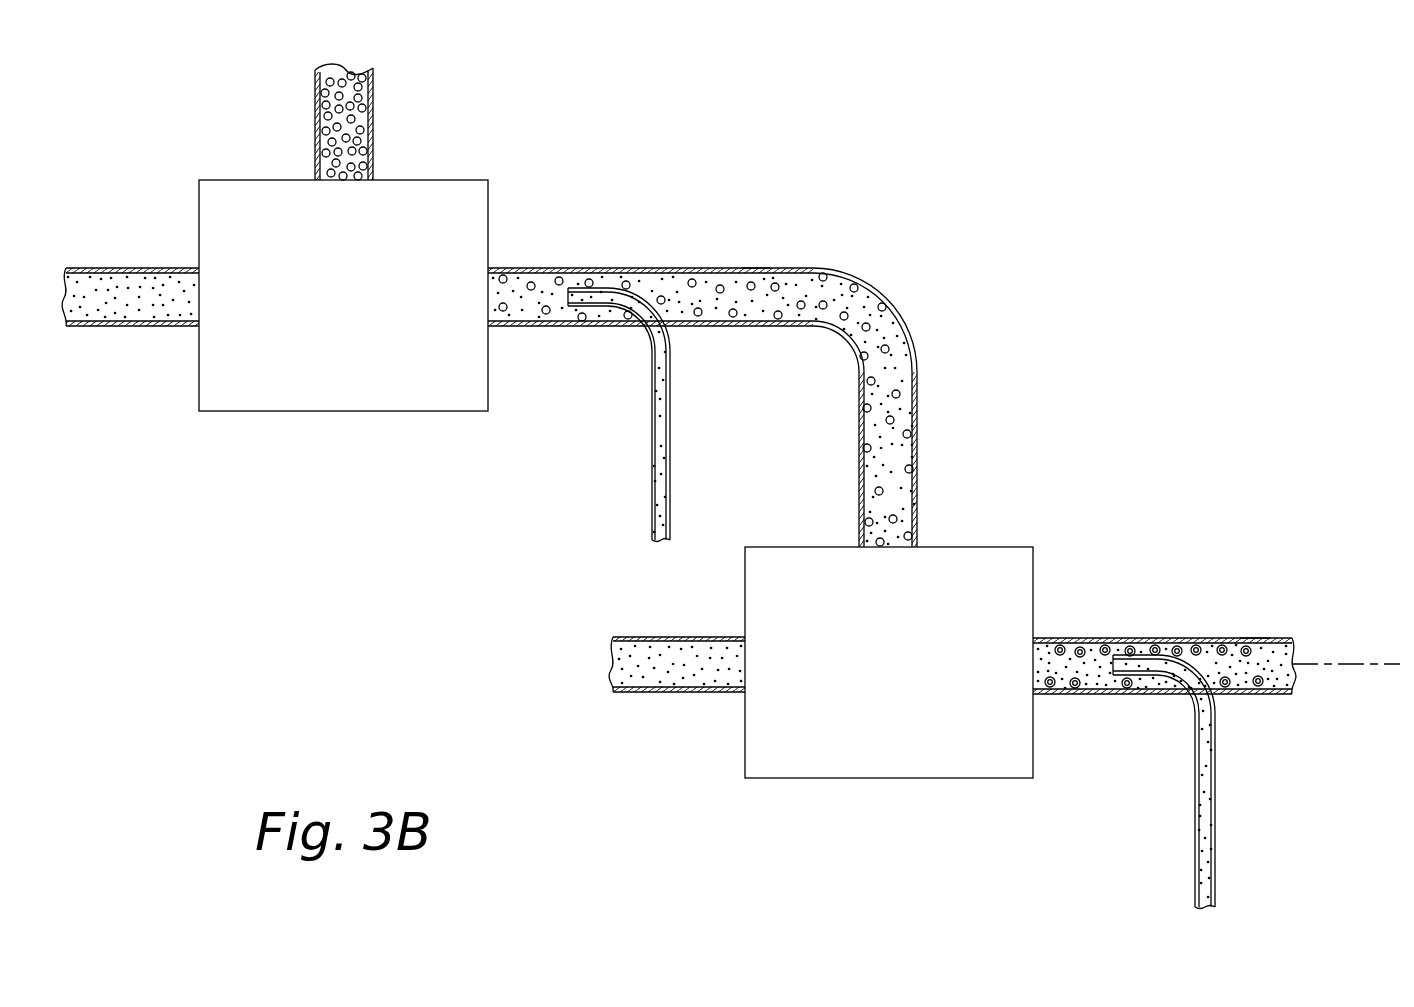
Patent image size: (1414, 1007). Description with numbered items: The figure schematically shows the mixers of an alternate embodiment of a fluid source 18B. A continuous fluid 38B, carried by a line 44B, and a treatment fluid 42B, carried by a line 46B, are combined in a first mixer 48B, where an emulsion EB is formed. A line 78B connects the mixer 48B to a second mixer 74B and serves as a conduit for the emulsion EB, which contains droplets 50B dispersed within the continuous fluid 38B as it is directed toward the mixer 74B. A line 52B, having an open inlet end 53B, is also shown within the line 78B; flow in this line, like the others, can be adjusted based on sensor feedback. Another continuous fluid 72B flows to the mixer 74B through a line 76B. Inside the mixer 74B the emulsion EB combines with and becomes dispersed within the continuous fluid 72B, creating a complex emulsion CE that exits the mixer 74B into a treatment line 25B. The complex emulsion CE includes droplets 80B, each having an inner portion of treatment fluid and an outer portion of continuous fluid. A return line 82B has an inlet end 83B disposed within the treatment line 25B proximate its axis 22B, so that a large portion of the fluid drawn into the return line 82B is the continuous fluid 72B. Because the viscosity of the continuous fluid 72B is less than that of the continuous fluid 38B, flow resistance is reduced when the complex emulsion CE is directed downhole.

The fluid source 18B is at (168, 97).
The treatment fluid 42B is at (327, 124).
The line 46B is at (373, 111).
The line 44B is at (147, 268).
The continuous fluid 38B is at (102, 312).
The mixer 48B is at (294, 414).
The line 78B is at (527, 268).
The droplets 50B is at (676, 280).
The emulsion EB is at (755, 268).
The open end of inner tube 53B is at (561, 304).
The line 52B is at (670, 432).
The line 76B is at (693, 637).
The continuous fluid 72B is at (648, 675).
The mixer 74B is at (836, 781).
The treatment line 25B is at (1105, 638).
The droplets 80B is at (1193, 642).
The complex emulsion CE is at (1255, 638).
The axis 22B is at (1377, 660).
The open end of second inner tube 83B is at (1100, 671).
The return line 82B is at (1215, 870).